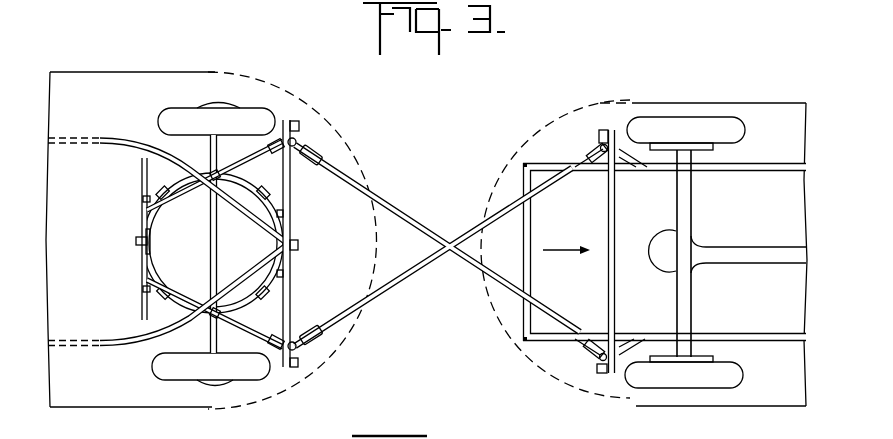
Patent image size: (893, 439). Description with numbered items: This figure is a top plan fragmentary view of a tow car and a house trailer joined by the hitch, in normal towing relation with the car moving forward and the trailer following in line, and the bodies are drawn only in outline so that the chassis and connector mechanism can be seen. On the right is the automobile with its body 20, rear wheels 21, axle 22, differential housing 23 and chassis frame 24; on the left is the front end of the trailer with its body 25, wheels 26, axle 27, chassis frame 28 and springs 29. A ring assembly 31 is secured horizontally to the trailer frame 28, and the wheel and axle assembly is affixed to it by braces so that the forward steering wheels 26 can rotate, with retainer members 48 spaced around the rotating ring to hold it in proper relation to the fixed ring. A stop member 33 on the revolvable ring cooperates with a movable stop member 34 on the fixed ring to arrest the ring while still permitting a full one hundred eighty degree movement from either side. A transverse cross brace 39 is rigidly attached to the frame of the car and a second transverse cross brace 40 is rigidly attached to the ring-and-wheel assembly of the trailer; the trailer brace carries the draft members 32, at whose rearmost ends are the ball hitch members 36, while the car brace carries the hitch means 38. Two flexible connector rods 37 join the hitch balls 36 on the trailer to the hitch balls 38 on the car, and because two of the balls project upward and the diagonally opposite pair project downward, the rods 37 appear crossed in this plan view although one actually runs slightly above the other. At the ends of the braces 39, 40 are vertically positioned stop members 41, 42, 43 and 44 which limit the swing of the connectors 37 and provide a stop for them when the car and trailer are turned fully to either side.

The body 20 is at (677, 397).
The rear wheels 21 is at (727, 127).
The axle 22 is at (685, 219).
The differential housing 23 is at (673, 260).
The chassis frame 24 is at (755, 172).
The body 25 is at (147, 80).
The wheels 26 is at (240, 118).
The axle 27 is at (210, 218).
The chassis frame 28 is at (125, 150).
The springs 29 is at (167, 325).
The ring assembly 31 is at (233, 184).
The draft members 32 is at (255, 153).
The stop member 33 is at (299, 245).
The movable stop member 34 is at (137, 243).
The ball hitch members 36 is at (300, 136).
The flexible connector rods 37 is at (452, 237).
The hitch means 38 is at (598, 150).
The cross brace 39 is at (614, 233).
The cross brace 40 is at (288, 205).
The stop member 41 is at (302, 127).
The stop member 42 is at (294, 368).
The stop member 43 is at (607, 127).
The stop member 44 is at (603, 373).
The retainer members 48 is at (282, 196).